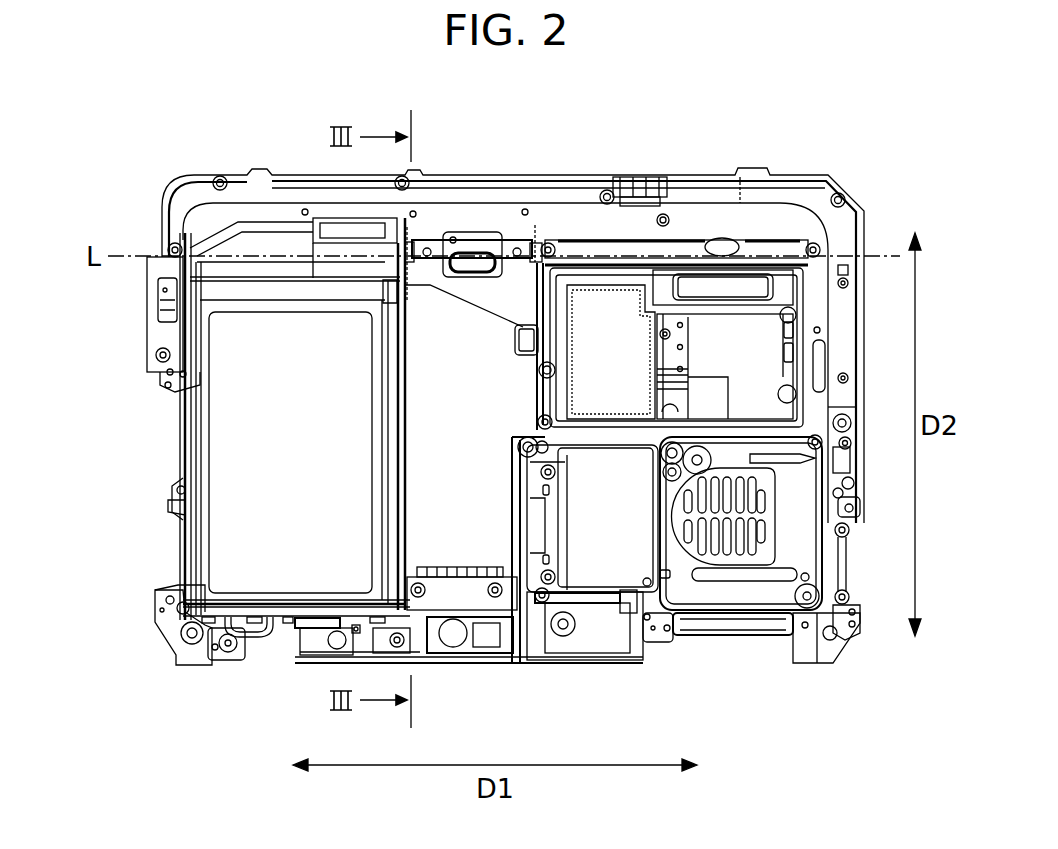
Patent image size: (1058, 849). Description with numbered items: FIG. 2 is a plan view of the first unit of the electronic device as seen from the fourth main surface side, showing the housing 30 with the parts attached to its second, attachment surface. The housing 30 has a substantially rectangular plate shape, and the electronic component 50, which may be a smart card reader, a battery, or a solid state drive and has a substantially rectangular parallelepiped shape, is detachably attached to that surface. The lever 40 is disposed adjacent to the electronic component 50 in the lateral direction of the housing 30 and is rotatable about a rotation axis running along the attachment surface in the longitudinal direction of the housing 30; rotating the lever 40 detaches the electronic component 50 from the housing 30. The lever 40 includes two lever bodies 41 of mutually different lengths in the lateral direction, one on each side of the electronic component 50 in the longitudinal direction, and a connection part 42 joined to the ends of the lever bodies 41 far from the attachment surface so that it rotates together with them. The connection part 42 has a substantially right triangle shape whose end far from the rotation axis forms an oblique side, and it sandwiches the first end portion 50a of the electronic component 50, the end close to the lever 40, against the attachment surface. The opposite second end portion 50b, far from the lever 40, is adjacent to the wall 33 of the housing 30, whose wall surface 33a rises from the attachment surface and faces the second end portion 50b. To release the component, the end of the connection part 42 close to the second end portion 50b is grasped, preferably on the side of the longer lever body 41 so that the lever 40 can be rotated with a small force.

The housing 30 is at (705, 192).
The lever 40 is at (502, 213).
The lever bodies 41 is at (414, 252).
The connection part 42 is at (479, 292).
The electronic component 50 is at (247, 419).
The first end portion 50a is at (430, 319).
The second end portion 50b is at (432, 523).
The wall 33 is at (477, 645).
The wall surface 33a is at (458, 566).